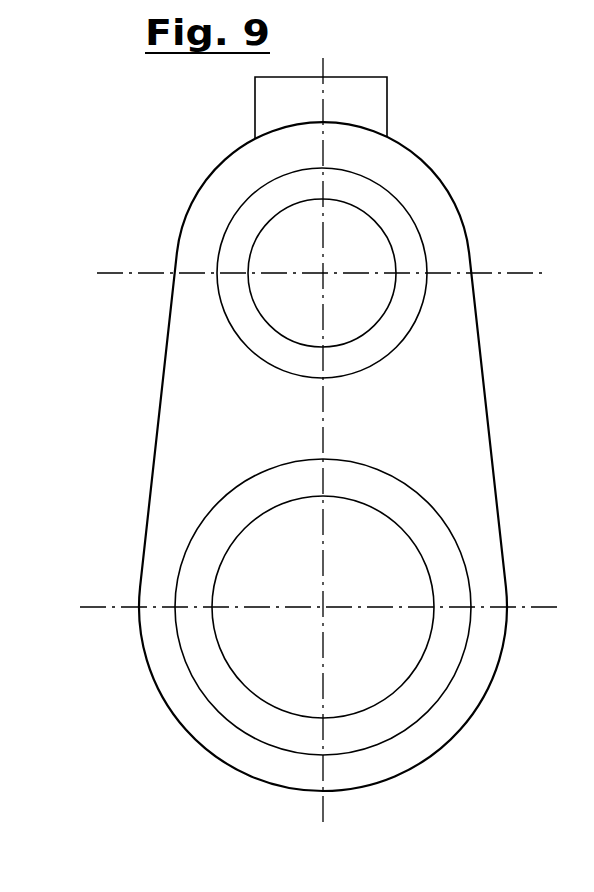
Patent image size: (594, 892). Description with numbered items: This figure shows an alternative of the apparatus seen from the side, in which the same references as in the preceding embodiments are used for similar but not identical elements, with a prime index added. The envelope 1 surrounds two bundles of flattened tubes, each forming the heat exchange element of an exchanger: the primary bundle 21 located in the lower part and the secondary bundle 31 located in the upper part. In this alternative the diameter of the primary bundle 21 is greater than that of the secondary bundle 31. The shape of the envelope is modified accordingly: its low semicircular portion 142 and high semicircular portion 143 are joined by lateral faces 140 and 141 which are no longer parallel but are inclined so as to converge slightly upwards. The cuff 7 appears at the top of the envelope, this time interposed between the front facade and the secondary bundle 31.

The envelope 1 is at (505, 522).
The cuff 7 is at (272, 99).
The primary bundle 21 is at (217, 677).
The secondary bundle 31 is at (237, 225).
The lateral face 140 is at (158, 413).
The lateral face 141 is at (478, 342).
The low semicircular portion 142 is at (400, 780).
The high semicircular portion 143 is at (423, 161).